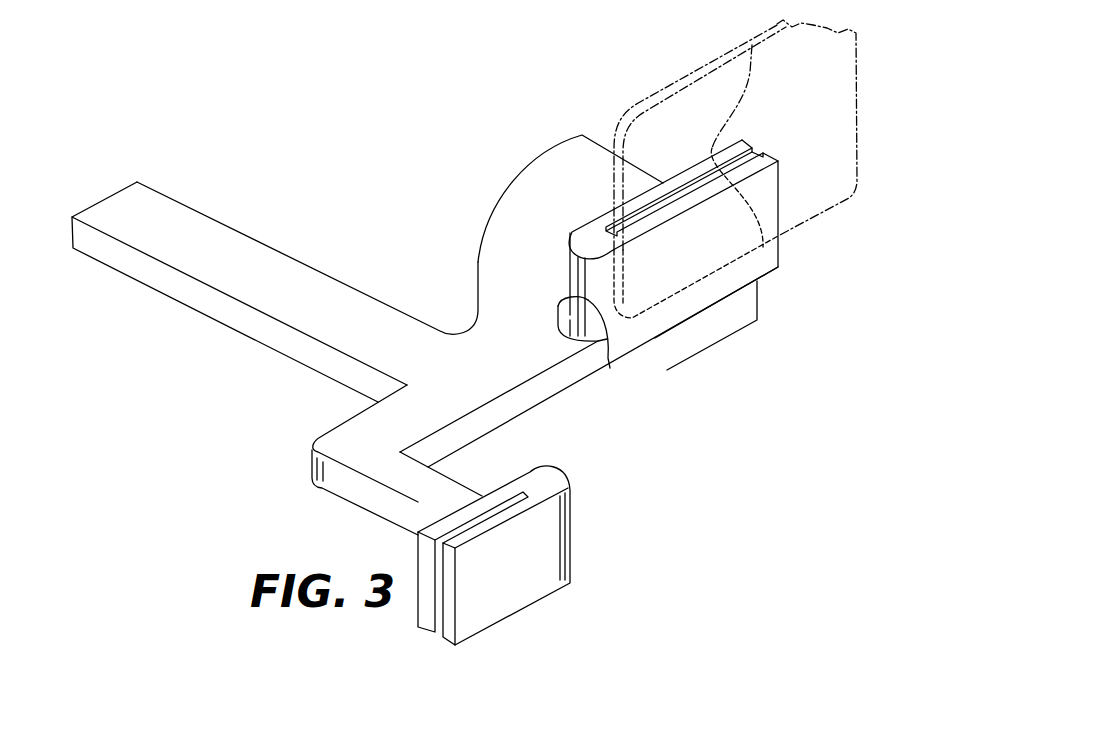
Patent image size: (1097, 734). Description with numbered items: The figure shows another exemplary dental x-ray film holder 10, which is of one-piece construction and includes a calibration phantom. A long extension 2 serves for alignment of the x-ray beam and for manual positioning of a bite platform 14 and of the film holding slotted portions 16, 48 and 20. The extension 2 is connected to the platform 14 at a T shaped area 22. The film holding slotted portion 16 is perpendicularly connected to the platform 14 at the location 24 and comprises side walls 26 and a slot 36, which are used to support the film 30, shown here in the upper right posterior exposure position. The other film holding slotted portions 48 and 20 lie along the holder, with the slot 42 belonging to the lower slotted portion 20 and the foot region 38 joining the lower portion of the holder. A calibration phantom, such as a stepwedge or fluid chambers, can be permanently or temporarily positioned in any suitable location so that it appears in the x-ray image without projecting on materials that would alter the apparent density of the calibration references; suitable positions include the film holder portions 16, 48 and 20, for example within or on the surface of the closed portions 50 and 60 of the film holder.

The extension 2 is at (220, 240).
The x-ray film holder 10 is at (275, 292).
The bite platform 14 is at (543, 162).
The film holding slotted portion 16 is at (694, 261).
The film holding slotted portion 20 is at (526, 543).
The T shaped area 22 is at (428, 410).
The connection location 24 is at (557, 329).
The side walls 26 is at (720, 186).
The film 30 is at (760, 169).
The slot 36 is at (688, 190).
The base foot 38 is at (378, 475).
The slot in lower clip block 42 is at (503, 502).
The film holding slotted portion 48 is at (683, 362).
The closed portion 50 is at (610, 368).
The closed portion 60 is at (563, 527).